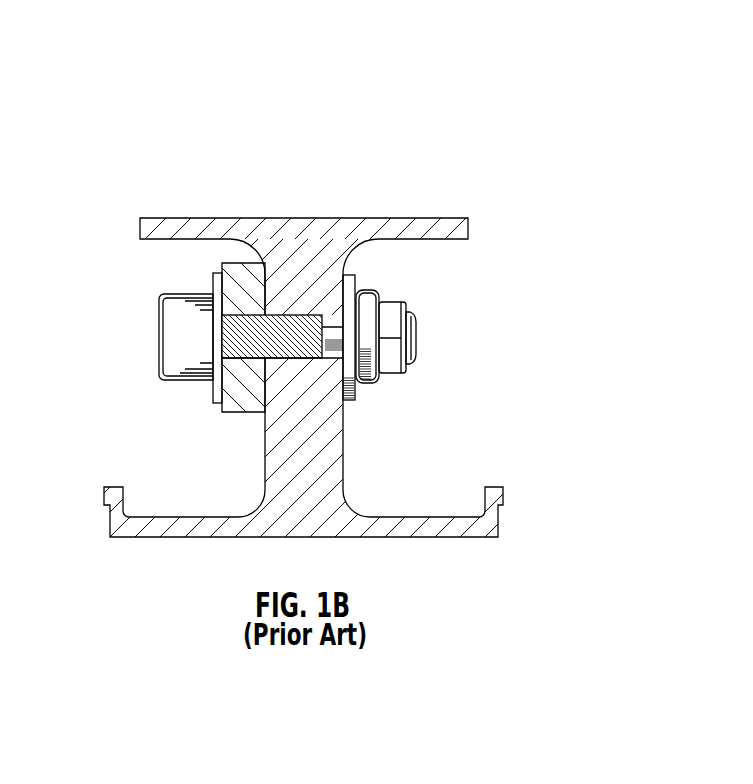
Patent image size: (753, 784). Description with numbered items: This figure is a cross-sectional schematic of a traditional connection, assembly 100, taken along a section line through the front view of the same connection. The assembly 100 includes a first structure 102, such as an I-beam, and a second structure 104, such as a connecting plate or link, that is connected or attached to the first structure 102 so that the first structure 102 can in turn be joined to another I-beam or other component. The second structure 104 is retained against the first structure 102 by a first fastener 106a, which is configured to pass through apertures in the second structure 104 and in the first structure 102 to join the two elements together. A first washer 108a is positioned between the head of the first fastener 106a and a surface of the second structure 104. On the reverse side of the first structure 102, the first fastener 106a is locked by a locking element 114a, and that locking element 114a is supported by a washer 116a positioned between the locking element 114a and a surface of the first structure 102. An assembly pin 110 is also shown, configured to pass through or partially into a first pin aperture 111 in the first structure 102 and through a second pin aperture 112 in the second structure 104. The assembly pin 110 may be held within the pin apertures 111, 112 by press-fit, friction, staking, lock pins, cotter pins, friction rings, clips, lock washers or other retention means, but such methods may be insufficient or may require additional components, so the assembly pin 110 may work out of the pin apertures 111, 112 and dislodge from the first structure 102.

The assembly 100 is at (548, 126).
The first structure 102 is at (428, 232).
The second structure 104 is at (253, 395).
The first fastener 106a is at (177, 347).
The first washer 108a is at (215, 286).
The assembly pin 110 is at (250, 363).
The first pin aperture 111 is at (300, 360).
The second pin aperture 112 is at (253, 316).
The locking element 114a is at (412, 362).
The washer 116a is at (353, 285).